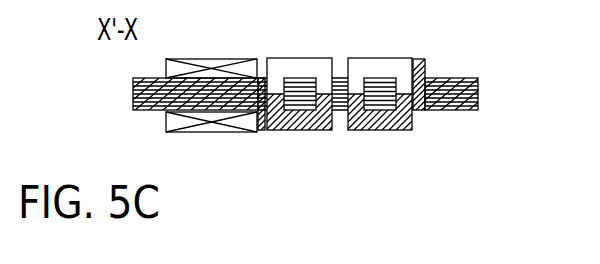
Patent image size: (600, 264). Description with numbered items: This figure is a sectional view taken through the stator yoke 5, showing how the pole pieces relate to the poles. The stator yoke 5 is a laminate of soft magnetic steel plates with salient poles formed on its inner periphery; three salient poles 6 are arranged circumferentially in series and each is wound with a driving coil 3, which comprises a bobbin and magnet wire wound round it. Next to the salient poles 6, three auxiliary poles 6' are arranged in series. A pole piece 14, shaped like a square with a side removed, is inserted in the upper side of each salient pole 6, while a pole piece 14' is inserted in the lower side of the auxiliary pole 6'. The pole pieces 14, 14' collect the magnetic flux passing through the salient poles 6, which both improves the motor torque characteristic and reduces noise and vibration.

The driving coil 3 is at (213, 72).
The stator yoke 5 is at (300, 98).
The salient pole 6 is at (295, 99).
The auxiliary pole 6' is at (446, 70).
The pole piece 14 is at (345, 142).
The pole piece 14' is at (450, 62).